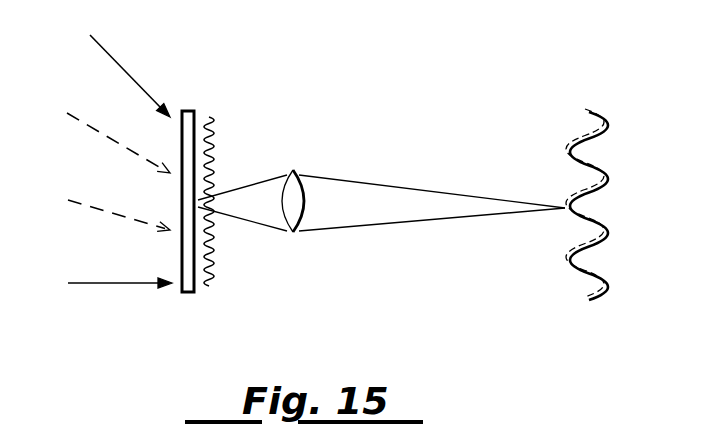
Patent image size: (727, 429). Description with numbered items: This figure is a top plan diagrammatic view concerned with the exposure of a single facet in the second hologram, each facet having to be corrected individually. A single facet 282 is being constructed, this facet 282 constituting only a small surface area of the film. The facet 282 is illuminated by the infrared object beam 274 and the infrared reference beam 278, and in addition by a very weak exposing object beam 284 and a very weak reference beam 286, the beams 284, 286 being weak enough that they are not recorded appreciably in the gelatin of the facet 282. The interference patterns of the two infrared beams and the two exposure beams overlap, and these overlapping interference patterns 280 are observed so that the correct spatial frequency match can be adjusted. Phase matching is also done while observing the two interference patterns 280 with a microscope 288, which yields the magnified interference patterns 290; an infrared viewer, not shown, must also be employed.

The infrared object beam 274 is at (115, 53).
The infrared reference beam 278 is at (100, 285).
The overlapping interference patterns 280 is at (212, 125).
The facet 282 is at (177, 298).
The exposing object beam 284 is at (100, 133).
The reference beam 286 is at (98, 212).
The microscope 288 is at (296, 171).
The magnified interference patterns 290 is at (594, 166).